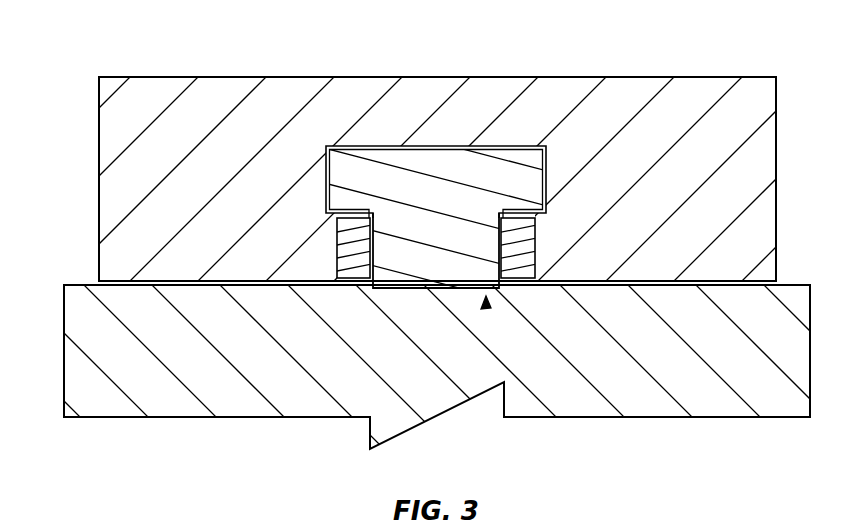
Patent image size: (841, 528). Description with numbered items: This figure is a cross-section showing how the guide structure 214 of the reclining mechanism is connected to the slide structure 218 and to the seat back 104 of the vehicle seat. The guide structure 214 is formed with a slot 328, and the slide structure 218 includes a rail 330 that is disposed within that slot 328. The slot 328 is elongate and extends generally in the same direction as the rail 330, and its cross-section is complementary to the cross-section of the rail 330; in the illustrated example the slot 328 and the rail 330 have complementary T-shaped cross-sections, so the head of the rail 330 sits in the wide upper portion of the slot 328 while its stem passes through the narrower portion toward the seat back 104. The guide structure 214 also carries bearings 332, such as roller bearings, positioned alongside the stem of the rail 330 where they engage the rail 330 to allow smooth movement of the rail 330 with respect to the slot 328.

The seat back 104 is at (64, 372).
The guide structure 214 is at (100, 192).
The slide structure 218 is at (486, 306).
The slot 328 is at (352, 143).
The rail 330 is at (442, 160).
The bearings 332 is at (342, 255).